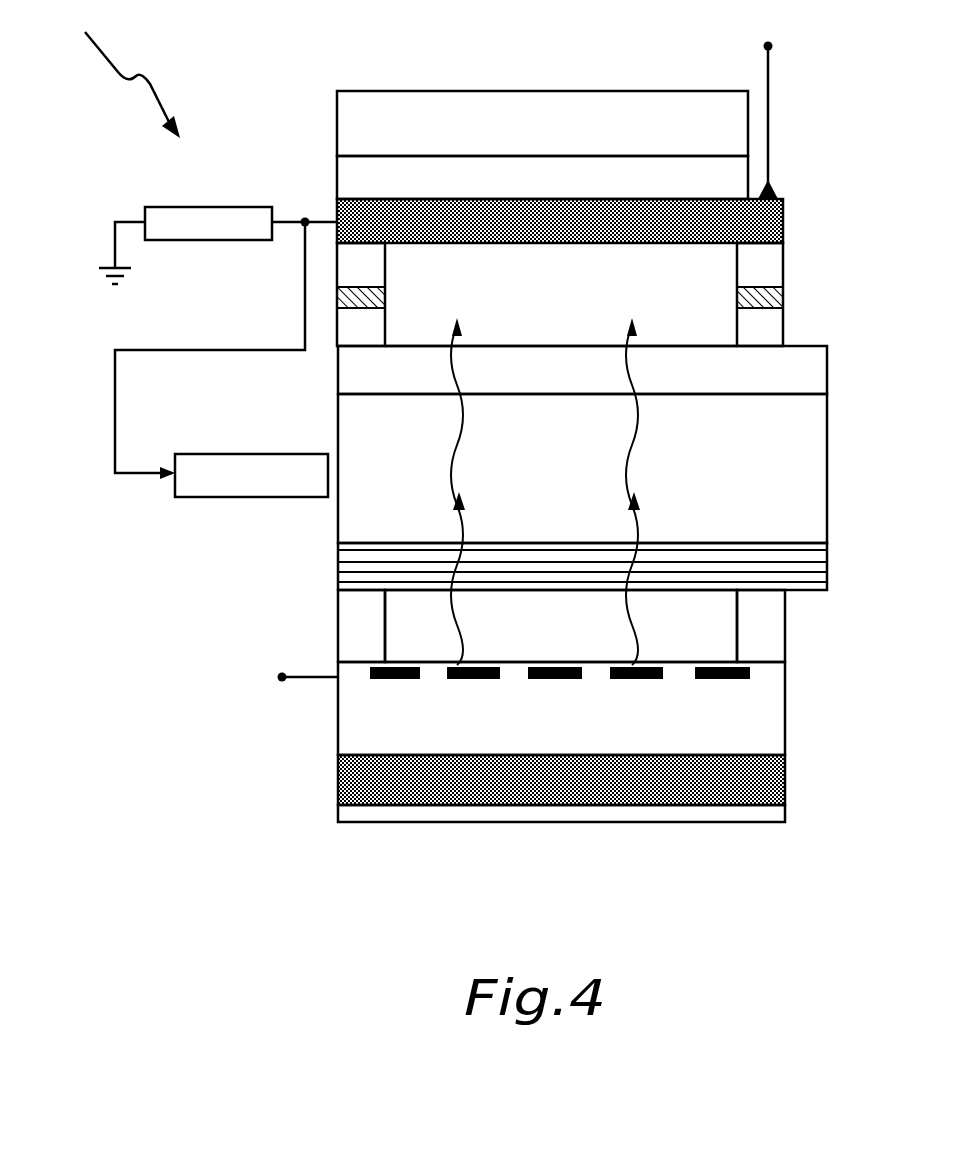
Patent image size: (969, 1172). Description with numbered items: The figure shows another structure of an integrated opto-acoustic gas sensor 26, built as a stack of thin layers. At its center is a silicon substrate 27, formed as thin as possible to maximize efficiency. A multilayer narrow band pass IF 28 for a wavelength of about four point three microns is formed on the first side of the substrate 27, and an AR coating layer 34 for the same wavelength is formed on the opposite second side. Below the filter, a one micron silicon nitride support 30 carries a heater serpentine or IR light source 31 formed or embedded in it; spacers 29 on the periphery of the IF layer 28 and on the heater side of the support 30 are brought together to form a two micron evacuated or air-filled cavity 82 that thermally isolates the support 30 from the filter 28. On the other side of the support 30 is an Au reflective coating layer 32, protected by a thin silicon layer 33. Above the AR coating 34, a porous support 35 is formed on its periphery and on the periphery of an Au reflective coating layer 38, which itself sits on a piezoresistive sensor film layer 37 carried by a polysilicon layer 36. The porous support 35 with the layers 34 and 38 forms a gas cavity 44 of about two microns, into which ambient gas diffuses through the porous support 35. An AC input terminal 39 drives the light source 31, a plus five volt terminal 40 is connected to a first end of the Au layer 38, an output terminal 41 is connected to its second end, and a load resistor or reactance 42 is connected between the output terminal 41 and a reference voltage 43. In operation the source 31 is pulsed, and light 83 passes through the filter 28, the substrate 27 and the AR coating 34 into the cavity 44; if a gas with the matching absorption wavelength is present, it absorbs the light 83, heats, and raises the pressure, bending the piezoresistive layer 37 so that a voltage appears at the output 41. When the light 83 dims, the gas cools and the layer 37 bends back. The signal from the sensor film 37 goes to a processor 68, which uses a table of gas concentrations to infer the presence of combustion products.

The gas sensor 26 is at (121, 71).
The silicon substrate 27 is at (582, 468).
The multilayer narrow band pass IF 28 is at (818, 560).
The spacers 29 is at (373, 627).
The silicon nitride support 30 is at (561, 708).
The heater serpentine or IR light source 31 is at (493, 665).
The Au reflective coating layer 32 is at (783, 773).
The silicon layer 33 is at (783, 820).
The AR coating layer 34 is at (814, 368).
The porous support 35 is at (375, 267).
The polysilicon layer 36 is at (542, 123).
The piezoresistive sensor film layer 37 is at (337, 175).
The Au reflective coating layer 38 is at (783, 212).
The electrical alternating current input terminal 39 is at (302, 680).
The plus five volt terminal 40 is at (769, 100).
The output terminal 41 is at (305, 300).
The load resistor or reactance 42 is at (195, 240).
The reference voltage 43 is at (100, 268).
The gas cavity 44 is at (561, 322).
The processor 68 is at (243, 497).
The evacuated or air-filled cavity 82 is at (561, 626).
The light 83 is at (462, 326).